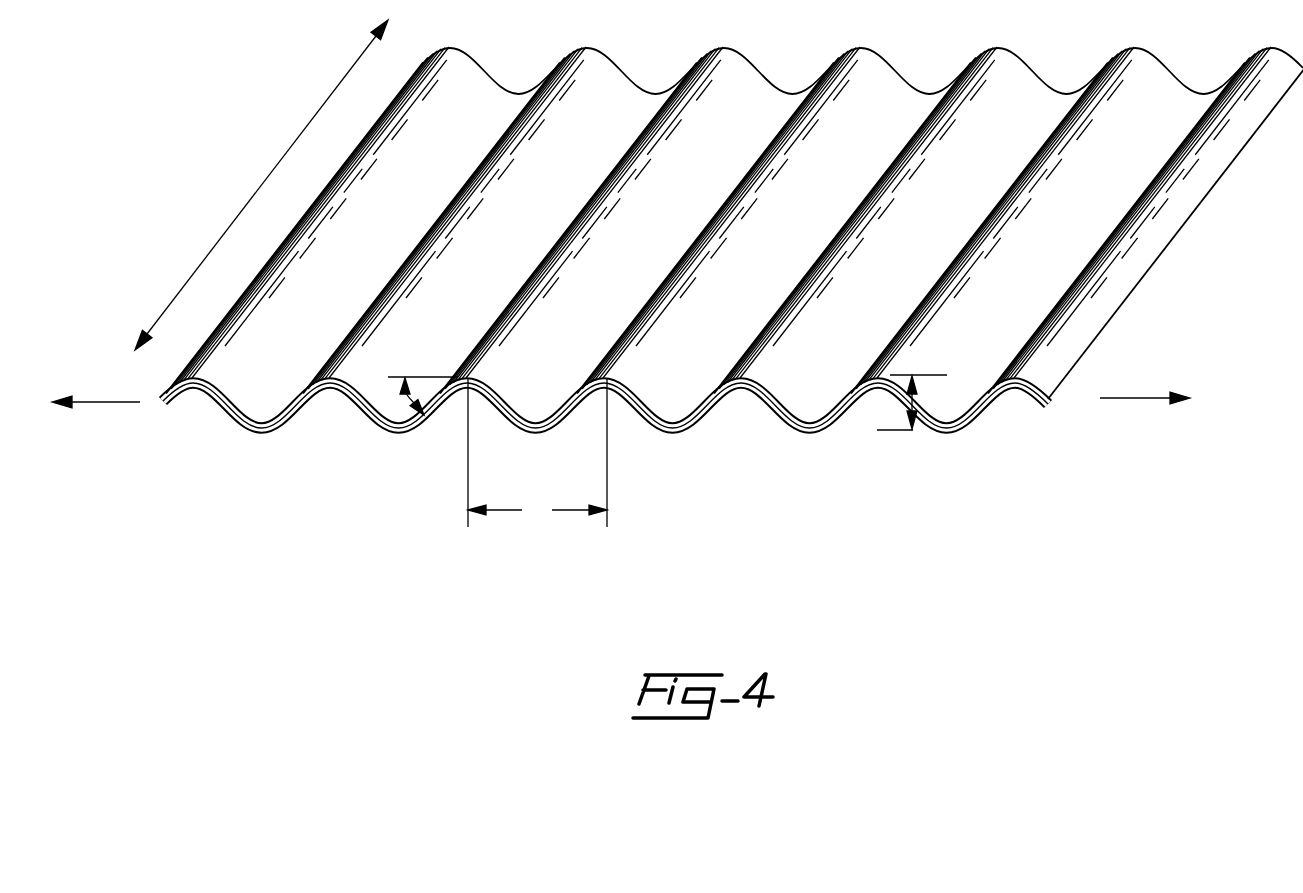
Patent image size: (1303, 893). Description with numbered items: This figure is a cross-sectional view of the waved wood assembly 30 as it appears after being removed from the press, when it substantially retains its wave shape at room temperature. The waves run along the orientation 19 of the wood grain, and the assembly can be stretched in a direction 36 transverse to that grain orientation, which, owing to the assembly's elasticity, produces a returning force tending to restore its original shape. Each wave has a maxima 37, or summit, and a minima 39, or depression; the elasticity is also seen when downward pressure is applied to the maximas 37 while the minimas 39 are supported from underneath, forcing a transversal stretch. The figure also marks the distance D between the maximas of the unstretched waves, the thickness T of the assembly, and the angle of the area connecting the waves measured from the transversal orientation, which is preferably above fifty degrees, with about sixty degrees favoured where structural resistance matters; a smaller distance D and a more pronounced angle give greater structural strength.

The orientation of the wood grain 19 is at (258, 188).
The waved wood assembly 30 is at (733, 303).
The direction 36 is at (105, 402).
The maximas 37 is at (627, 373).
The minimas 39 is at (820, 433).
The distance D is at (537, 452).
The thickness T is at (917, 417).